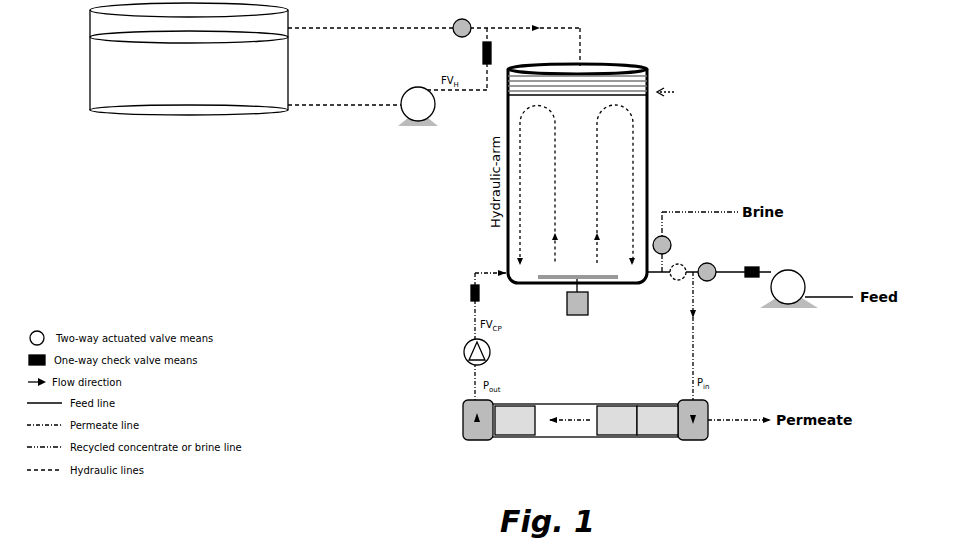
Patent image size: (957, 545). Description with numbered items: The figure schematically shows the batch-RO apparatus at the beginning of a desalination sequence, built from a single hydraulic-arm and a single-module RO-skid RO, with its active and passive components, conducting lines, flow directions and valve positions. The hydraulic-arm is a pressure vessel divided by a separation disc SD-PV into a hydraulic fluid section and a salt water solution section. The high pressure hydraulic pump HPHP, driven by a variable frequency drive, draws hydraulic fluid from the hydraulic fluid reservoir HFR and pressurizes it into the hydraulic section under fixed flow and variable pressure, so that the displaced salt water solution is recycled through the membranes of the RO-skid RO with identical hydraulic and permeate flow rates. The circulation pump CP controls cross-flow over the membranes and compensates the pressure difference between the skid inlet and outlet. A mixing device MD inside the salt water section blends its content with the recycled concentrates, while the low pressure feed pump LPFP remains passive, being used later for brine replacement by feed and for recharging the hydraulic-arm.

The hydraulic fluid reservoir HFR is at (189, 61).
The high pressure hydraulic pump HPHP is at (418, 121).
The mixing device MD is at (577, 204).
The separation disc inside pressure vessel SD-PV is at (684, 92).
The circulation pump CP is at (454, 354).
The low pressure feed pump LPFP is at (789, 305).
The RO-skid RO is at (585, 428).